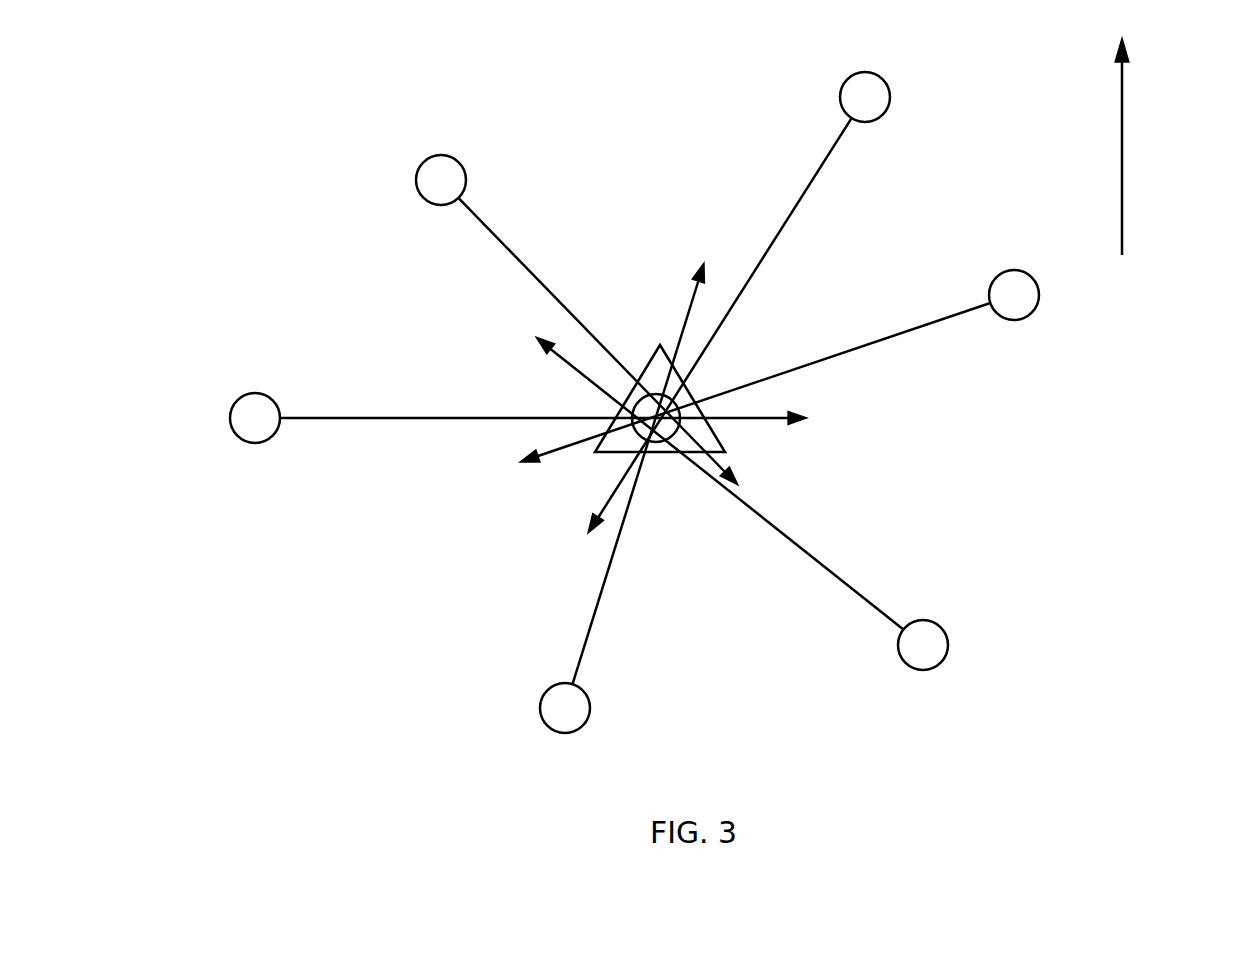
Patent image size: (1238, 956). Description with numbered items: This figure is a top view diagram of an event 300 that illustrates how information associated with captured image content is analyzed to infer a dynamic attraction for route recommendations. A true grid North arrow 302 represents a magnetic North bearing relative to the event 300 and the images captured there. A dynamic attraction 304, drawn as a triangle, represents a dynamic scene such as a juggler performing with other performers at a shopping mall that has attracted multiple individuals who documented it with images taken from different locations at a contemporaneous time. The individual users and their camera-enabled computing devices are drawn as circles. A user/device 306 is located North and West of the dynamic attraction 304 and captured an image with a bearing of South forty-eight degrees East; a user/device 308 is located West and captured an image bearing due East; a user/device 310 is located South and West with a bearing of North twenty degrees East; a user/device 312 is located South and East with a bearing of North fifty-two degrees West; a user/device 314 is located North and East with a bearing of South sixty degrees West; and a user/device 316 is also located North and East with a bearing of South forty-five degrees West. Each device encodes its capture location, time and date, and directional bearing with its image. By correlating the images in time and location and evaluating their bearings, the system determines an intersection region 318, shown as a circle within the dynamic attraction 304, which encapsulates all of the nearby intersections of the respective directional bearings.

The event 300 is at (184, 67).
The true grid North arrow 302 is at (1122, 123).
The dynamic attraction 304 is at (720, 437).
The user/device 306 is at (437, 172).
The user/device 308 is at (250, 417).
The user/device 310 is at (558, 718).
The user/device 312 is at (932, 655).
The user/device 314 is at (1020, 287).
The user/device 316 is at (870, 87).
The intersection region 318 is at (636, 431).